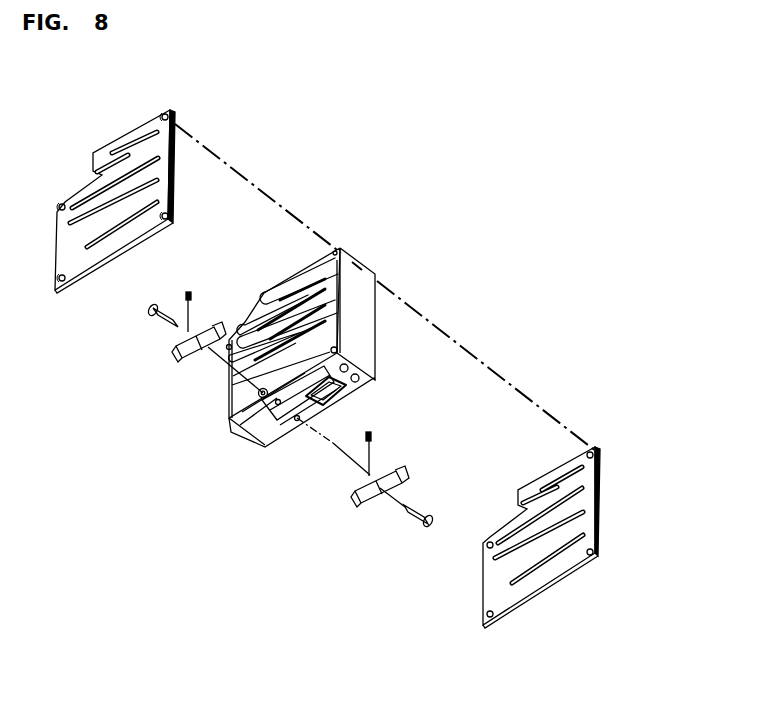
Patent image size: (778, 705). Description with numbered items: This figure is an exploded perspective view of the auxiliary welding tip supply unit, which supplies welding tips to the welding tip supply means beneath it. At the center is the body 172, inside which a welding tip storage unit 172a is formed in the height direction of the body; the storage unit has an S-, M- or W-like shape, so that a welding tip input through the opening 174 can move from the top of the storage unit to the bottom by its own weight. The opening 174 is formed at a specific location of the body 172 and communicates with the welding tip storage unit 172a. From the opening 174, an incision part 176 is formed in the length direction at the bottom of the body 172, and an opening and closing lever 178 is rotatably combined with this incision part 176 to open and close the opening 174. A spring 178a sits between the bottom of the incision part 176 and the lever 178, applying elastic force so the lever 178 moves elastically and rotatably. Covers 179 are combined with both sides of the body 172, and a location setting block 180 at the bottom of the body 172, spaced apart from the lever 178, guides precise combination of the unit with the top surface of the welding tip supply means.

The body 172 is at (360, 330).
The welding tip storage unit 172a is at (337, 283).
The opening 174 is at (232, 427).
The incision part 176 is at (277, 438).
The opening and closing lever 178 is at (396, 473).
The spring 178a is at (375, 435).
The cover 179 is at (586, 500).
The location setting block 180 is at (347, 402).